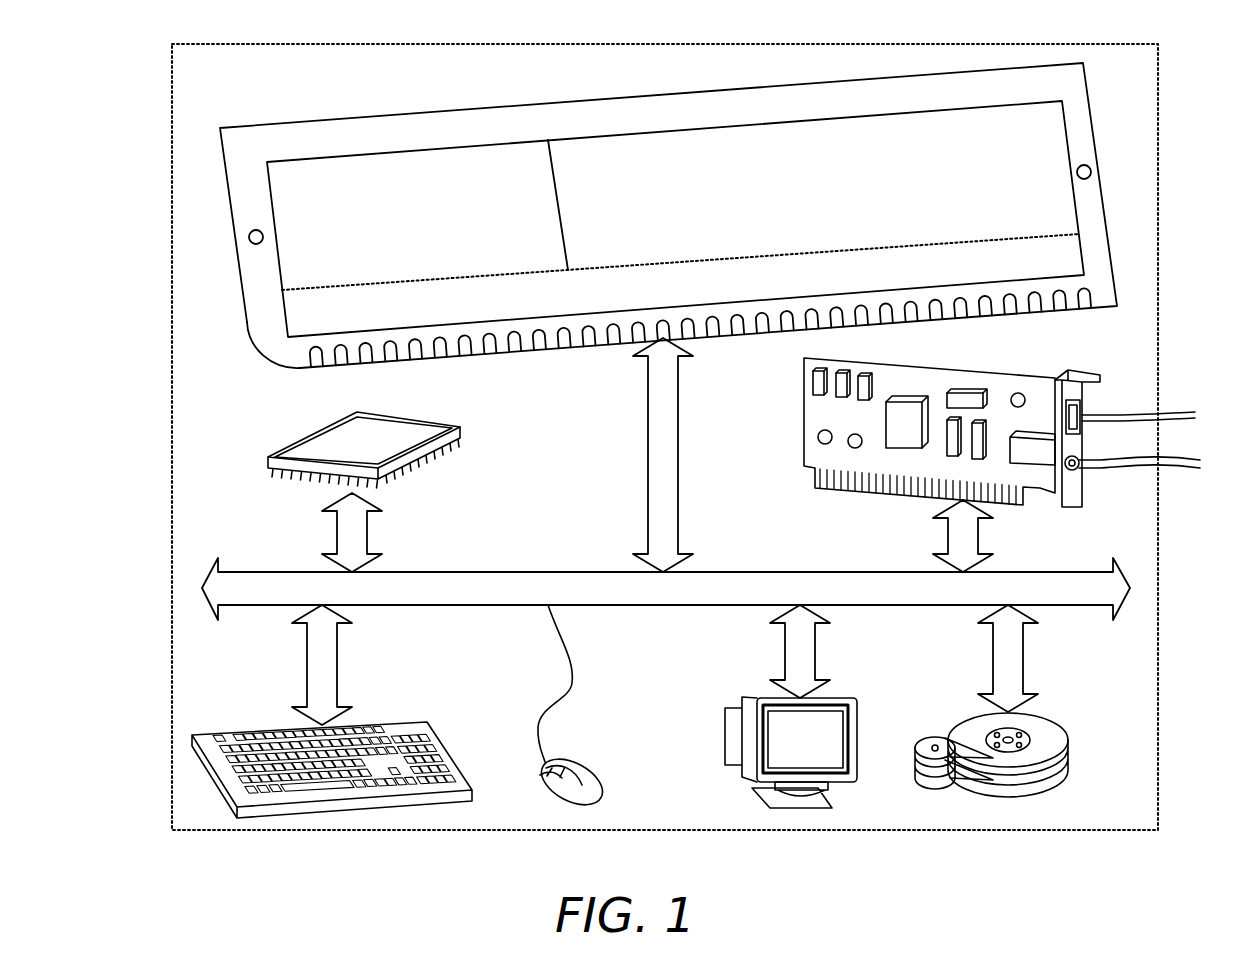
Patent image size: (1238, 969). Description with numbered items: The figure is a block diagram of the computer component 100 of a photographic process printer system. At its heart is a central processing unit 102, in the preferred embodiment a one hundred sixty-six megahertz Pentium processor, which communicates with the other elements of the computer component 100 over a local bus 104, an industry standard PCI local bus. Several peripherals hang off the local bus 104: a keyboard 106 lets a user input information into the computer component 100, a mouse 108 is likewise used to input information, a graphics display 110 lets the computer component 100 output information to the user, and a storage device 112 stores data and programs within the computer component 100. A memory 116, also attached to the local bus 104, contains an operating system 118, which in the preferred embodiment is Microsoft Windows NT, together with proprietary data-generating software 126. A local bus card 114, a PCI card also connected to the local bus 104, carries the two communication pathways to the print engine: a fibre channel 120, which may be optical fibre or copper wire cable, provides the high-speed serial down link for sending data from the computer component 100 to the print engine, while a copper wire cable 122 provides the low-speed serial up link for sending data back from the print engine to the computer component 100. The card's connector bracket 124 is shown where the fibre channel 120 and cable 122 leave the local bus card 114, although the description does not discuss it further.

The computer component 100 is at (303, 830).
The central processing unit 102 is at (460, 427).
The local bus 104 is at (507, 572).
The keyboard 106 is at (412, 718).
The mouse 108 is at (594, 753).
The graphics display 110 is at (857, 725).
The storage device 112 is at (1046, 719).
The local bus card 114 is at (804, 440).
The memory 116 is at (505, 107).
The operating system 118 is at (288, 337).
The fibre channel 120 is at (1187, 468).
The cable 122 is at (1172, 412).
The card bracket connector 124 is at (1044, 488).
The data-generating software 126 is at (560, 196).